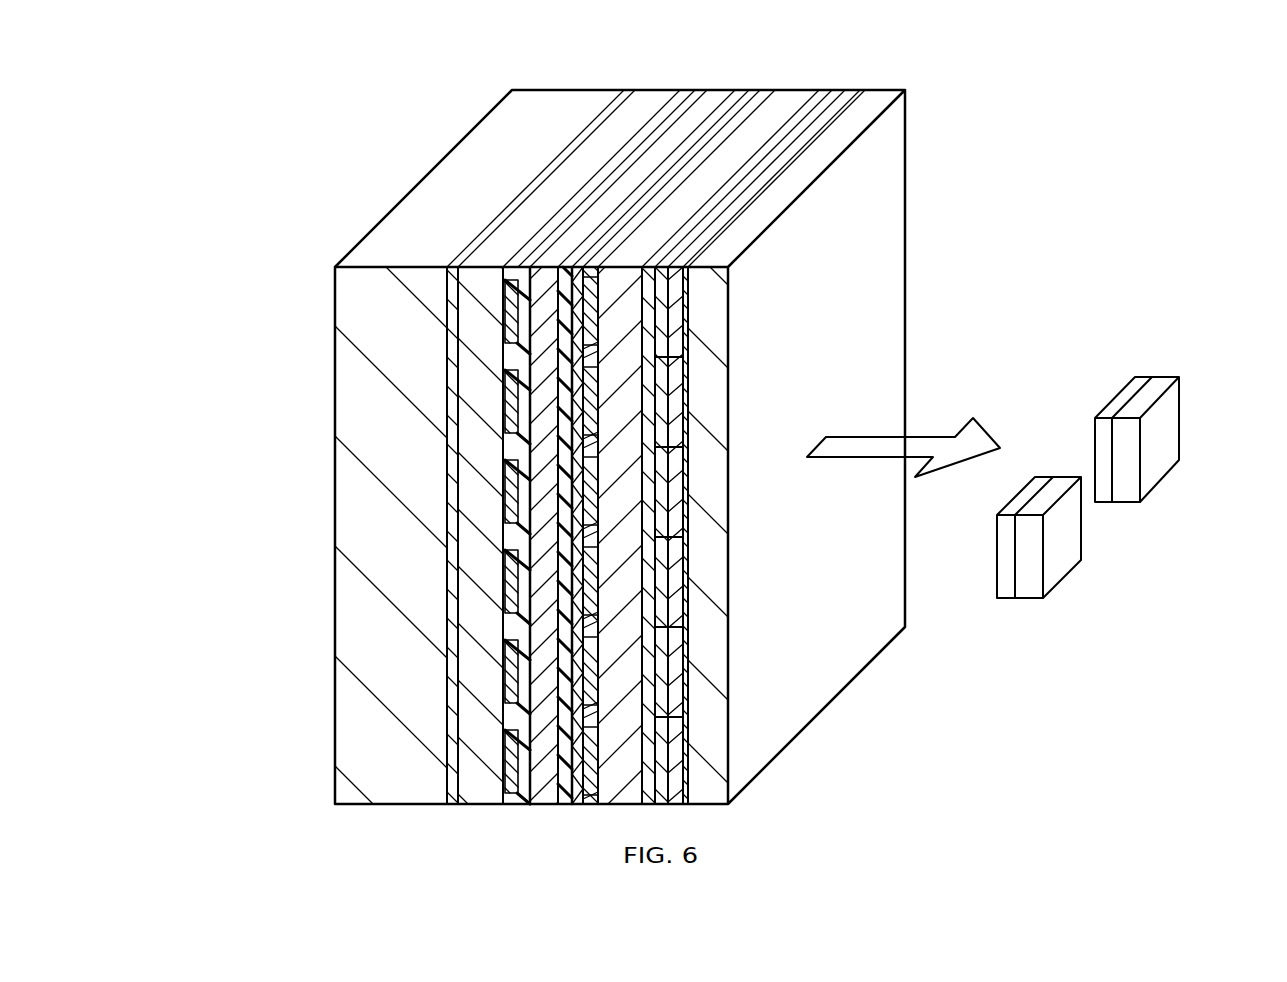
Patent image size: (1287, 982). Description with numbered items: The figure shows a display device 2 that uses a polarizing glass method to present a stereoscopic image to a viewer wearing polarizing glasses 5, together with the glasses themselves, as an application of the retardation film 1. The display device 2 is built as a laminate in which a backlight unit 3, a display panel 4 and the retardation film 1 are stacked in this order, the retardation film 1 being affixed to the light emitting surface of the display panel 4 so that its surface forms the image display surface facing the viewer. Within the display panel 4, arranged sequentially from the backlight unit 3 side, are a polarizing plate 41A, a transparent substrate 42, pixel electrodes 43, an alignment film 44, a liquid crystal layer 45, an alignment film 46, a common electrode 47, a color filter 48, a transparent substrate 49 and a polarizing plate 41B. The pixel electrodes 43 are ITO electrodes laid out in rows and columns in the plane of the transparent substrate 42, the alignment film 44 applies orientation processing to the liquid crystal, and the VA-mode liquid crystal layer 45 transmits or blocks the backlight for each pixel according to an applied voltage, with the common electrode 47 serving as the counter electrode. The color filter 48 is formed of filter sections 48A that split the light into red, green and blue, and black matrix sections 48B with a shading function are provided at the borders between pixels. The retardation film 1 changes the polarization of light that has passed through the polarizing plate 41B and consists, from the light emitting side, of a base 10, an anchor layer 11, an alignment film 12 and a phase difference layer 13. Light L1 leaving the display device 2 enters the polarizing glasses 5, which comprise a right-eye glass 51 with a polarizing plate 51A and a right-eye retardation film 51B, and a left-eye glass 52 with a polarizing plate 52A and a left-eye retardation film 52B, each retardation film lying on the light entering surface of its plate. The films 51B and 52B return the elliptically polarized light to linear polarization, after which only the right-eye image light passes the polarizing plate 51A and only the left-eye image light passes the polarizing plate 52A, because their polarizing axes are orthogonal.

The retardation film 1 is at (272, 300).
The display device 2 is at (806, 50).
The backlight unit 3 is at (348, 783).
The display panel 4 is at (219, 443).
The polarizing glasses 5 is at (1200, 148).
The base 10 is at (703, 308).
The anchor layer 11 is at (685, 335).
The alignment film 12 is at (674, 362).
The phase difference layer 13 is at (662, 392).
The polarizing plate 41A is at (452, 735).
The polarizing plate 41B is at (668, 447).
The transparent substrate 42 is at (475, 707).
The pixel electrodes 43 is at (513, 683).
The alignment film 44 is at (525, 665).
The liquid crystal layer 45 is at (543, 622).
The alignment film 46 is at (567, 595).
The common electrode 47 is at (578, 567).
The color filter 48 is at (262, 500).
The filter sections 48A is at (592, 513).
The black matrix sections 48B is at (582, 540).
The transparent substrate 49 is at (612, 482).
The right-eye glass 51 is at (1213, 316).
The polarizing plate 51A is at (1173, 415).
The right-eye retardation film 51B is at (1127, 392).
The left-eye glass 52 is at (1098, 657).
The polarizing plate 52A is at (1053, 572).
The left-eye retardation film 52B is at (1007, 590).
The light L1 is at (930, 434).